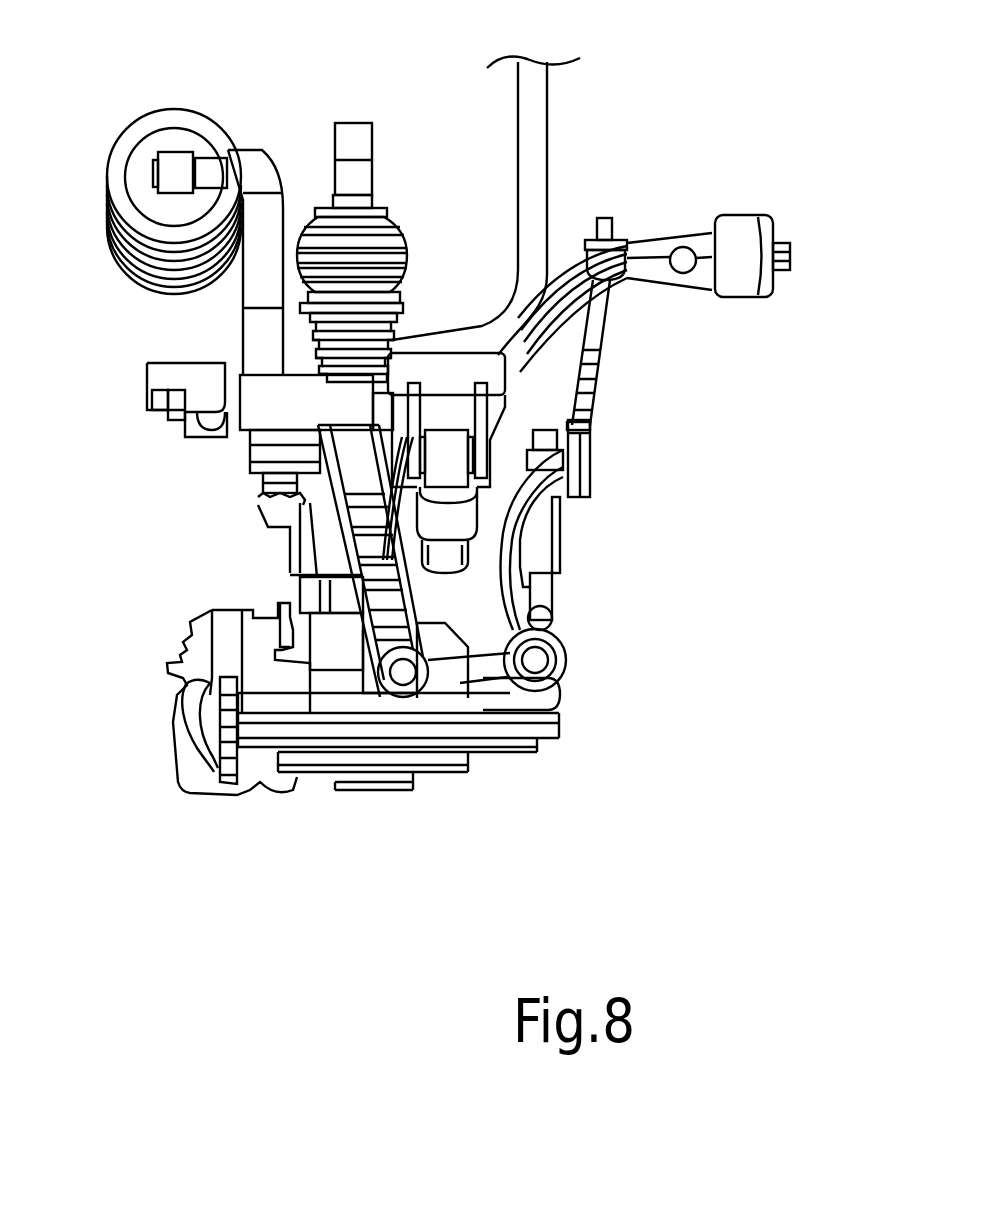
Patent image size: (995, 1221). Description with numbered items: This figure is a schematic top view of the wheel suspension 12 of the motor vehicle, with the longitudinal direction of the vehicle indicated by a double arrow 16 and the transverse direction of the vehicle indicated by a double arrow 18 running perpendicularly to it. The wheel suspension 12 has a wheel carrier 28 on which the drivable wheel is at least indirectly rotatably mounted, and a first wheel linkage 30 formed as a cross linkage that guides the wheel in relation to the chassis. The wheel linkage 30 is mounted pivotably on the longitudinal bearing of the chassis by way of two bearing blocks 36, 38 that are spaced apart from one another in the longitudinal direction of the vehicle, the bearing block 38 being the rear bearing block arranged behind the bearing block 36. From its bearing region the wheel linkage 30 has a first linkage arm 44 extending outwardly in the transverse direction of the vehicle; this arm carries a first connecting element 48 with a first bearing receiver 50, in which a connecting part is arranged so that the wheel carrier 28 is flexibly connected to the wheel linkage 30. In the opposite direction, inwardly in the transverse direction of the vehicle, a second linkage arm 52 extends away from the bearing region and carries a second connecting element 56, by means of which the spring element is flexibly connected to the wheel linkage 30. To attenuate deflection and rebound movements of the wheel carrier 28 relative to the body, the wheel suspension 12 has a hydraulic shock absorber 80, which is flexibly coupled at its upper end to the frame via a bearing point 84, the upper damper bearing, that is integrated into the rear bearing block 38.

The wheel suspension 12 is at (427, 790).
The double arrow 16 is at (658, 797).
The double arrow 18 is at (117, 452).
The wheel carrier 28 is at (563, 657).
The first wheel linkage 30 is at (240, 322).
The bearing block 36 is at (157, 377).
The bearing block 38 is at (500, 390).
The first linkage arm 44 is at (395, 572).
The first connecting element 48 is at (375, 690).
The first bearing receiver 50 is at (405, 678).
The second linkage arm 52 is at (282, 192).
The second connecting element 56 is at (180, 167).
The shock absorber 80 is at (473, 522).
The bearing point 84 is at (440, 401).